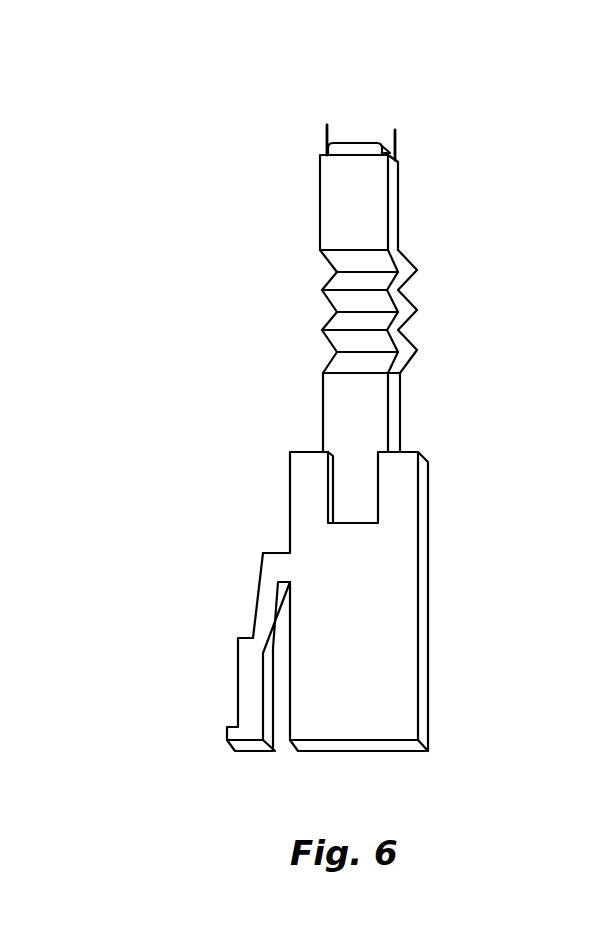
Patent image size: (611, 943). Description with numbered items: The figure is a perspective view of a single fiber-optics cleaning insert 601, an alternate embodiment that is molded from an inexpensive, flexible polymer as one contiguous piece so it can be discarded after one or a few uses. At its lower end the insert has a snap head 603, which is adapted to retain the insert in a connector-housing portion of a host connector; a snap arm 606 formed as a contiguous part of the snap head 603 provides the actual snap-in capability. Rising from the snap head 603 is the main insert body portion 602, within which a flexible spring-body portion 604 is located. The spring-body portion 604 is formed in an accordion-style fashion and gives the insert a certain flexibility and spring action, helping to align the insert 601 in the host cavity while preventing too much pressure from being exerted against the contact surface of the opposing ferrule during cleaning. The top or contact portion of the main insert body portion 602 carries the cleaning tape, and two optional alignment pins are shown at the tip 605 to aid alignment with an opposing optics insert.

The fiber-optics cleaning insert 601 is at (124, 346).
The main insert body portion 602 is at (398, 187).
The snap head 603 is at (428, 677).
The spring-body portion 604 is at (335, 313).
The tip cap 605 is at (357, 140).
The snap arm 606 is at (235, 675).